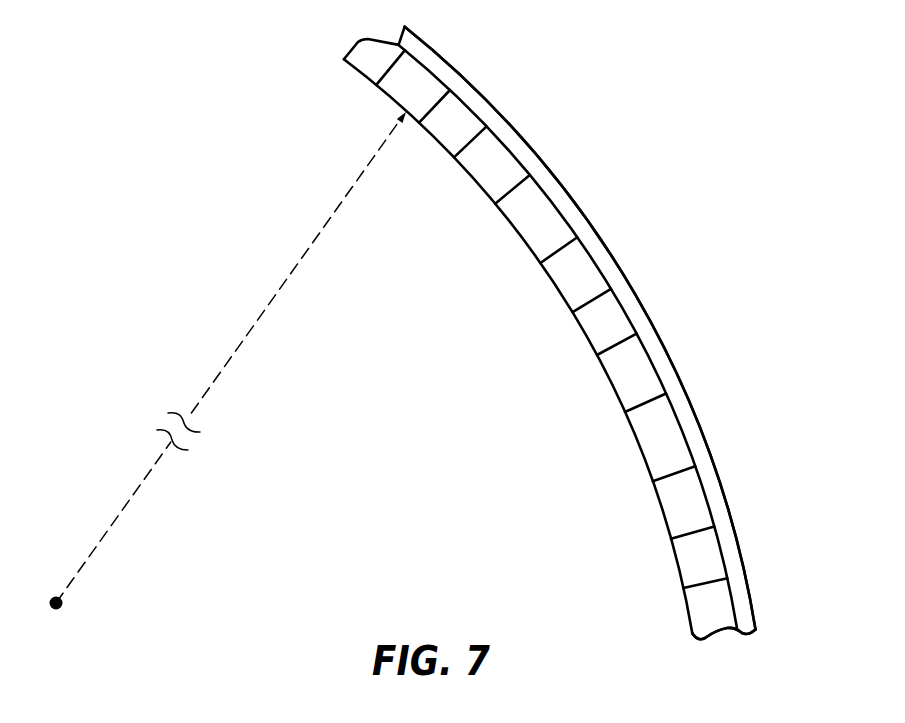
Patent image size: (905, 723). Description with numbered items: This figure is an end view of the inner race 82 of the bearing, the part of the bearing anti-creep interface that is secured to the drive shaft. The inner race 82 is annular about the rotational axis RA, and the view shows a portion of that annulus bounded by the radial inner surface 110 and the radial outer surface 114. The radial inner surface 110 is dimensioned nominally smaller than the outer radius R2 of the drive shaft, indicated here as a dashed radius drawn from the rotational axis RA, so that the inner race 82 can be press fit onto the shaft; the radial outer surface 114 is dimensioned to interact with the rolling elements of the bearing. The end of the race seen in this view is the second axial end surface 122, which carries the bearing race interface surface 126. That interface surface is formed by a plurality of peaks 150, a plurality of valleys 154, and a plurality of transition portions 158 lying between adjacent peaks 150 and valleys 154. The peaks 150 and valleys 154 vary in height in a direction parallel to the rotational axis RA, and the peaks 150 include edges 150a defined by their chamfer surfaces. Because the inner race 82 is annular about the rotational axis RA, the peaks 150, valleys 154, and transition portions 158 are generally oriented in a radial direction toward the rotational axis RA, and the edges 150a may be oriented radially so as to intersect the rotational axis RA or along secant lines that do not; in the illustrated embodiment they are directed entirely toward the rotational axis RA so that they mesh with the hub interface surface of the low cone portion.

The inner race 82 is at (592, 159).
The radial inner surface 110 is at (672, 598).
The radial outer surface 114 is at (760, 579).
The second axial end surface 122 is at (713, 618).
The bearing race interface surface 126 is at (713, 618).
The peaks 150 is at (457, 125).
The edges 150a is at (590, 308).
The valleys 154 is at (573, 195).
The transition portions 158 is at (418, 82).
The outer radius R2 is at (277, 292).
The rotational axis RA is at (53, 597).